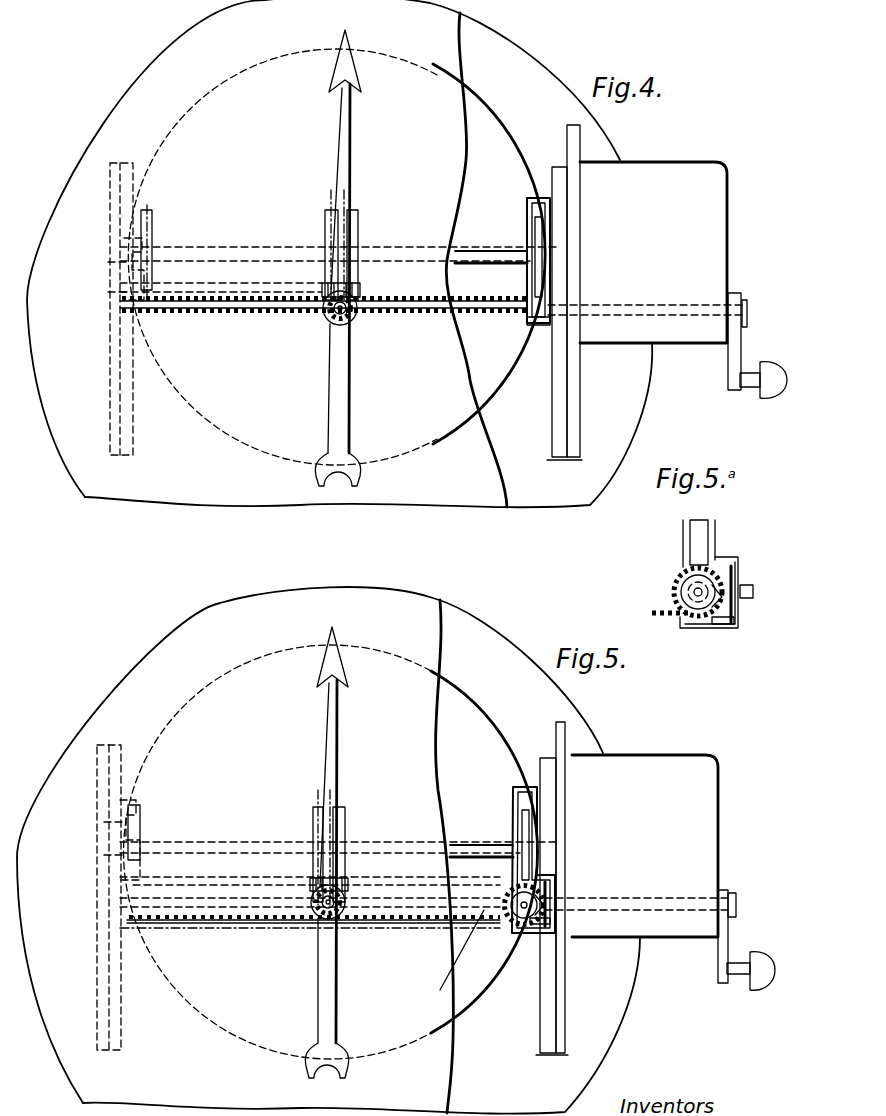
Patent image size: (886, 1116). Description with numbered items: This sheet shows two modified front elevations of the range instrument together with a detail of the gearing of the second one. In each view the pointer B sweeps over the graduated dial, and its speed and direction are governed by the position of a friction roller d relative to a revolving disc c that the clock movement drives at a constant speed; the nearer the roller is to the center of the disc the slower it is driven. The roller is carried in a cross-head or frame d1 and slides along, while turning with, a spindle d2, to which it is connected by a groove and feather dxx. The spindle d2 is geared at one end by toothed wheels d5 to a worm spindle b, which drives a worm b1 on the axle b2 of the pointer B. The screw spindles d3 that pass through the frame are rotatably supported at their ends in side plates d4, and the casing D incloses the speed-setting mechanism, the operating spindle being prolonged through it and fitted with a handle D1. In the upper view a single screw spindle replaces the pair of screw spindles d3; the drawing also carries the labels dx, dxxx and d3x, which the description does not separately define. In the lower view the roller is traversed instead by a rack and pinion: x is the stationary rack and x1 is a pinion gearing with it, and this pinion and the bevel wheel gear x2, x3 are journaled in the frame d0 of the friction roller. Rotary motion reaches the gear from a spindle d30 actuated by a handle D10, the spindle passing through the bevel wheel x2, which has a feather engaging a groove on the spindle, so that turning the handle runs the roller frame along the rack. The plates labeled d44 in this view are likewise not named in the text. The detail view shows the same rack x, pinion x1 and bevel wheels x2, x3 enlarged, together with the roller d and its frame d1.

In FIG. 4, the pointer B is at (350, 182).
In FIG. 5, the pointer B is at (340, 760).
In FIG. 4, the worm spindle b is at (210, 303).
In FIG. 5, the worm spindle b is at (242, 910).
In FIG. 4, the worm b1 is at (332, 316).
In FIG. 5, the worm b1 is at (346, 896).
In FIG. 4, the axle of the pointer b2 is at (352, 320).
In FIG. 5, the axle of the pointer b2 is at (320, 915).
In FIG. 4, the revolving disc c is at (206, 428).
In FIG. 5, the revolving disc c is at (390, 1058).
In FIG. 4, the friction roller d is at (537, 232).
In FIG. 5A, the friction roller d is at (705, 540).
In FIG. 5, the frame of the friction roller d0 is at (525, 822).
In FIG. 4, the cross-head or frame d1 is at (534, 266).
In FIG. 5A, the cross-head or frame d1 is at (683, 545).
In FIG. 5, the cross-head or frame d1 is at (520, 862).
In FIG. 4, the spindle d2 is at (340, 234).
In FIG. 5, the spindle d2 is at (479, 828).
In FIG. 5A, the screw spindle d3 is at (754, 593).
In FIG. 4, the stop d3x is at (512, 314).
In FIG. 4, the side plates d4 is at (114, 440).
In FIG. 5, the side plates d4 is at (110, 990).
In FIG. 4, the toothed wheels d5 is at (122, 258).
In FIG. 5, the toothed wheels d5 is at (112, 836).
In FIG. 5, the spindle d30 is at (440, 960).
In FIG. 4, the plate d44 is at (556, 398).
In FIG. 5, the plate d44 is at (548, 1018).
In FIG. 4, the rod dx is at (356, 240).
In FIG. 4, the groove and feather dxx is at (327, 222).
In FIG. 5, the groove and feather dxx is at (329, 847).
In FIG. 4, the rod dxxx is at (150, 246).
In FIG. 4, the casing D is at (663, 276).
In FIG. 5, the casing D is at (654, 869).
In FIG. 4, the handle D1 is at (758, 380).
In FIG. 5, the handle D10 is at (748, 968).
In FIG. 5A, the rack x is at (672, 618).
In FIG. 5, the rack x is at (510, 922).
In FIG. 5A, the pinion x1 is at (722, 596).
In FIG. 5, the pinion x1 is at (543, 900).
In FIG. 5A, the bevel wheel x2 is at (736, 620).
In FIG. 5, the bevel wheel x2 is at (550, 918).
In FIG. 5A, the bevel wheel x3 is at (725, 565).
In FIG. 5, the bevel wheel x3 is at (546, 880).